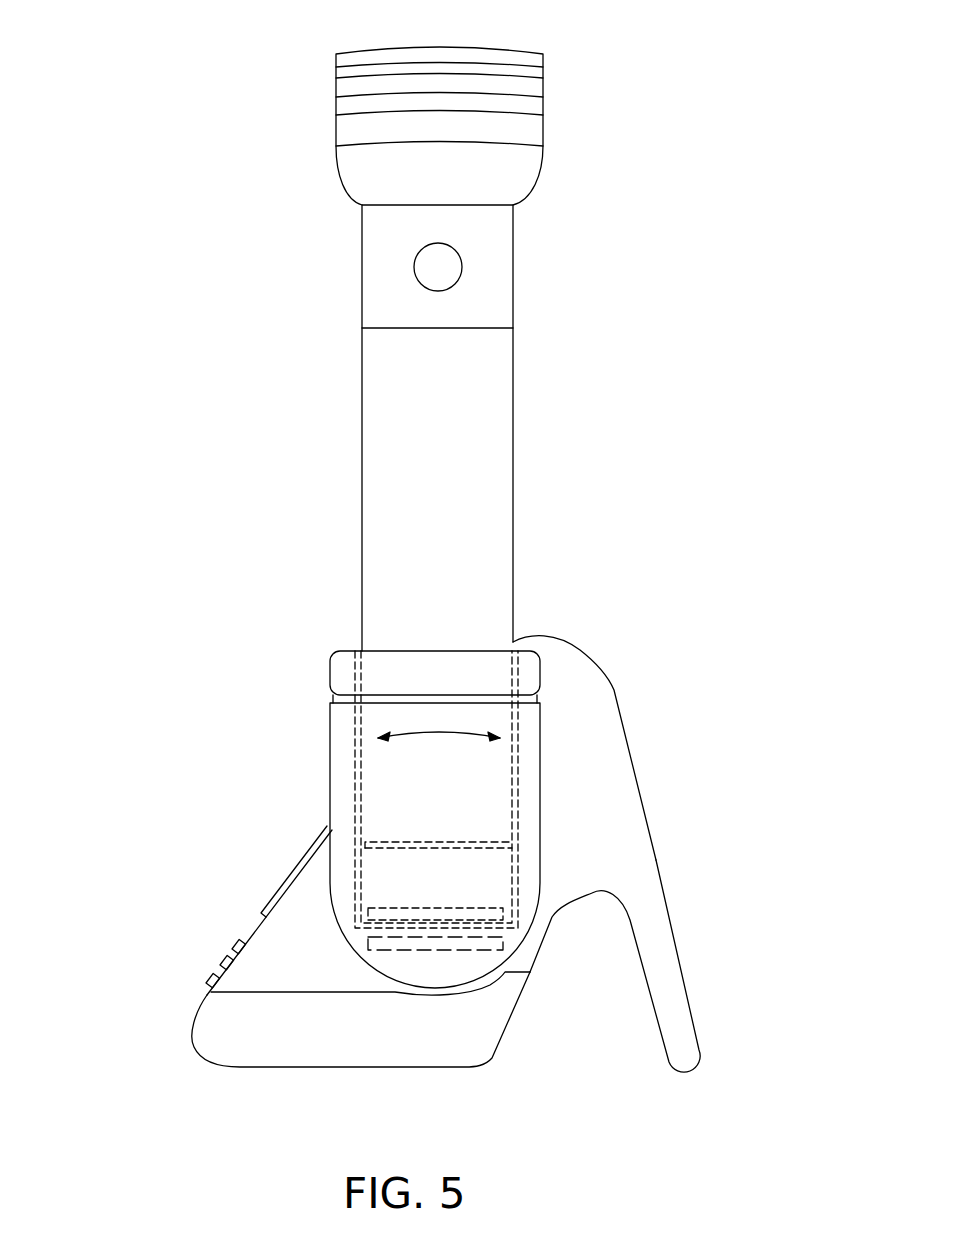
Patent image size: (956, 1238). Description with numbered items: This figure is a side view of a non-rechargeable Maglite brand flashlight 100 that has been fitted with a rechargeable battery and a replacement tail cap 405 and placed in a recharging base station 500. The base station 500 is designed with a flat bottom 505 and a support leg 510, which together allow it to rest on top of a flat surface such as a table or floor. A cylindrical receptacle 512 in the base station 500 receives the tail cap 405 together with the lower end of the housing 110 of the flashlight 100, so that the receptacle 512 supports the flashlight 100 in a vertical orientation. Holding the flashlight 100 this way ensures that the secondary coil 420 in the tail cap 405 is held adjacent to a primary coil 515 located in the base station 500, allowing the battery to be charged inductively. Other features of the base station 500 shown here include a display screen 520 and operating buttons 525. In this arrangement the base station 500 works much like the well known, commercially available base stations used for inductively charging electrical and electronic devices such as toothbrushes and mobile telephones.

The flashlight 100 is at (657, 235).
The housing 110 is at (488, 444).
The replacement tail cap 405 is at (425, 892).
The secondary coil 420 is at (472, 912).
The recharging base station 500 is at (597, 765).
The flat bottom 505 is at (455, 1070).
The support leg 510 is at (668, 1003).
The cylindrical receptacle 512 is at (342, 770).
The primary coil 515 is at (427, 947).
The display screen 520 is at (300, 873).
The operating buttons 525 is at (200, 976).